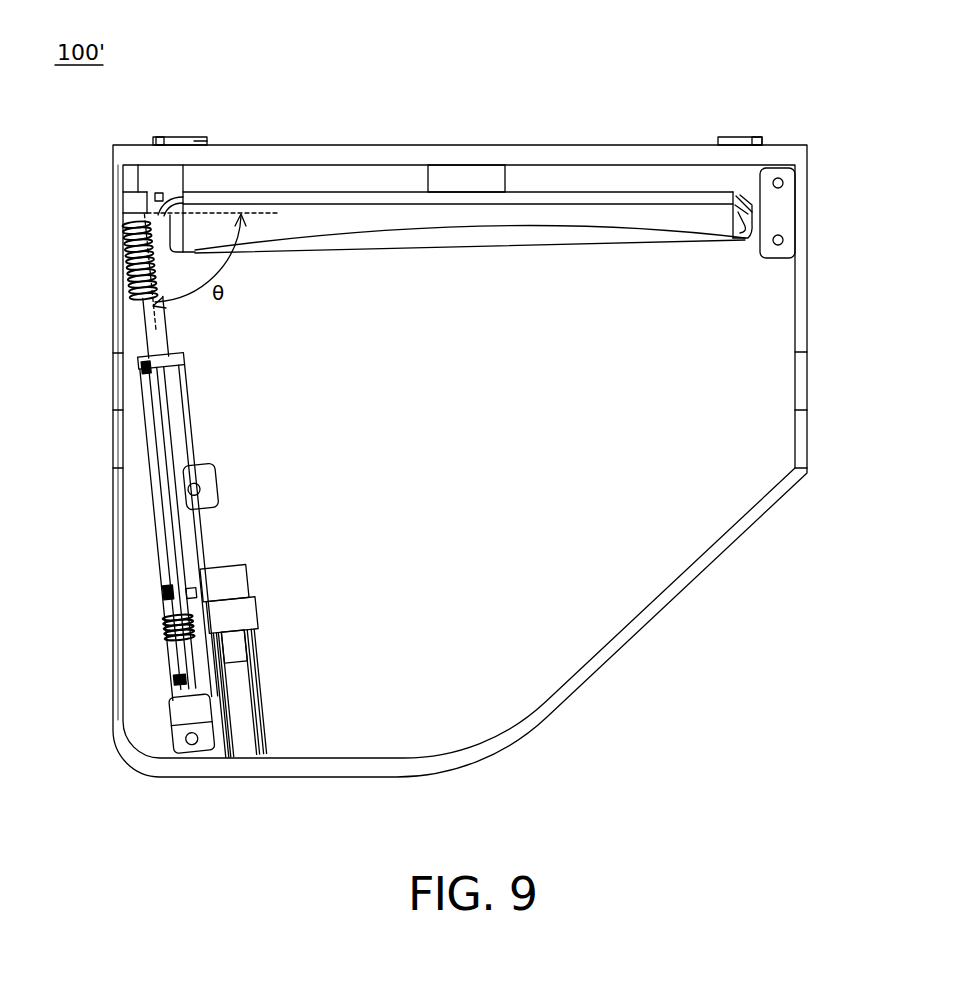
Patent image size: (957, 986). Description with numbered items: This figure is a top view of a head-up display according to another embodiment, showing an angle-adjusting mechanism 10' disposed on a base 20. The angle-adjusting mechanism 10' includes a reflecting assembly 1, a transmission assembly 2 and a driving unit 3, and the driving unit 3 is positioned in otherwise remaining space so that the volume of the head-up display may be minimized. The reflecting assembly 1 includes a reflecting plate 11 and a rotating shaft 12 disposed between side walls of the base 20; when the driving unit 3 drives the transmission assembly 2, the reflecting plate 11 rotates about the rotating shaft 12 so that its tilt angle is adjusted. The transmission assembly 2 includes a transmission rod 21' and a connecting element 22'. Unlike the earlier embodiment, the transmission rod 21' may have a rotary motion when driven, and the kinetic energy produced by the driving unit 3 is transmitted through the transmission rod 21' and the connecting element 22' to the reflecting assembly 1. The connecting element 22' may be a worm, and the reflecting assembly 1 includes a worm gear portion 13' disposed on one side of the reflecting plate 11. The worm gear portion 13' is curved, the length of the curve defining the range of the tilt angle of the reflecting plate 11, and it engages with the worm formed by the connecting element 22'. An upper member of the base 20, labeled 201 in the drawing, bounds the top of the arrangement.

The reflecting assembly 1 is at (76, 125).
The reflecting plate 11 is at (278, 212).
The worm gear portion 13' is at (115, 187).
The rotating shaft 12 is at (152, 207).
The transmission assembly 2 is at (74, 355).
The transmission rod 21' is at (155, 481).
The connecting element 22' is at (95, 442).
The driving unit 3 is at (243, 587).
The angle-adjusting mechanism 10' is at (459, 461).
The base 20 is at (714, 616).
The top frame member 201 is at (683, 145).